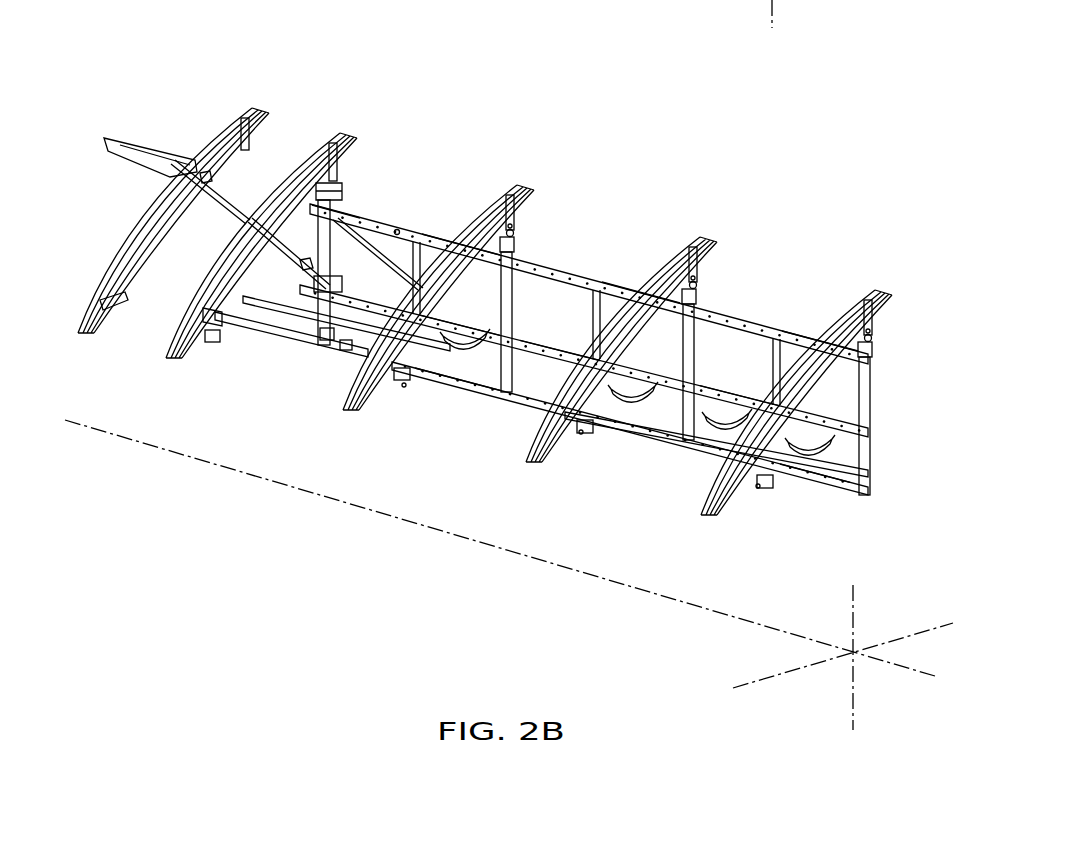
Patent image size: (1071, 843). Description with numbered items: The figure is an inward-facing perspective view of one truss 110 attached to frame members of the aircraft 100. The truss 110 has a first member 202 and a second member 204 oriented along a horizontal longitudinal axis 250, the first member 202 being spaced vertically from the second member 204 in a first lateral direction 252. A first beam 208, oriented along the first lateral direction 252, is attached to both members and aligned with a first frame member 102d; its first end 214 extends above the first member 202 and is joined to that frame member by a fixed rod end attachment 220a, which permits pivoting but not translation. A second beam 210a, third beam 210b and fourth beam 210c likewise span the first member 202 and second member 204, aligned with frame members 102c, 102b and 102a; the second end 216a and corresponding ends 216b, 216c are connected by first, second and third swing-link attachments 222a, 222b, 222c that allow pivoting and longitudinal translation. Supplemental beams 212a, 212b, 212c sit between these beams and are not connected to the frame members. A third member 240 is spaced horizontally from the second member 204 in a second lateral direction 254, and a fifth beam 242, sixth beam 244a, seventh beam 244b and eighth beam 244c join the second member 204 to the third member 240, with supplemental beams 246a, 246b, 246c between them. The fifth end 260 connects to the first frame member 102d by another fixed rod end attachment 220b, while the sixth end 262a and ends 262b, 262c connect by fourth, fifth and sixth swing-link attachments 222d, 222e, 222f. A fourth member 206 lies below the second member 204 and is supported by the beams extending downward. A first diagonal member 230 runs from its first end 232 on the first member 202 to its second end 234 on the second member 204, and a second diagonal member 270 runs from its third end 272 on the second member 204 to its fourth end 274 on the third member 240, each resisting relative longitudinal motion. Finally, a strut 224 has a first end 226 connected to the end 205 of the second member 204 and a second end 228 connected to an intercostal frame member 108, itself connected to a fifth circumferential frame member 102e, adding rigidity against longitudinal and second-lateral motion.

The aircraft 100 is at (165, 42).
The fourth frame member 102a is at (867, 290).
The third frame member 102b is at (693, 237).
The second frame member 102c is at (520, 183).
The first frame member 102d is at (335, 128).
The fifth circumferential frame member 102e is at (242, 105).
The another frame member 108 is at (133, 150).
The truss 110 is at (357, 547).
The first member 202 is at (582, 265).
The second member 204 is at (647, 375).
The end of the second member 205 is at (337, 205).
The fourth member 206 is at (820, 477).
The first beam 208 is at (318, 205).
The second beam 210a is at (508, 300).
The third beam 210b is at (695, 352).
The fourth beam 210c is at (875, 400).
The first supplemental beam 212a is at (433, 248).
The second supplemental beam 212b is at (622, 292).
The third supplemental beam 212c is at (780, 350).
The first end 214 is at (338, 215).
The second end 216a is at (515, 245).
The end of third beam 216b is at (697, 297).
The end of fourth beam 216c is at (872, 347).
The fixed rod end attachment 220a is at (335, 175).
The fixed rod end attachment 220b is at (214, 337).
The first swing-link attachment 222a is at (518, 230).
The second swing-link attachment 222b is at (700, 286).
The third swing-link attachment 222c is at (880, 332).
The fourth swing-link attachment 222d is at (404, 388).
The fifth swing-link attachment 222e is at (581, 434).
The sixth swing-link attachment 222f is at (758, 488).
The strut 224 is at (240, 220).
The first end of the strut 226 is at (307, 270).
The second end of the strut 228 is at (208, 185).
The first diagonal member 230 is at (388, 247).
The first end 232 is at (397, 228).
The second end 234 is at (343, 290).
The third member 240 is at (273, 320).
The fifth beam 242 is at (237, 303).
The sixth beam 244a is at (420, 380).
The seventh beam 244b is at (647, 423).
The eighth beam 244c is at (810, 480).
The fourth supplemental beam 246a is at (410, 332).
The fifth supplemental beam 246b is at (553, 367).
The sixth supplemental beam 246c is at (755, 405).
The longitudinal axis 250 is at (852, 0).
The first lateral direction 252 is at (772, 12).
The second lateral direction 254 is at (905, 630).
The fifth end 260 is at (238, 319).
The sixth end 262a is at (407, 374).
The end of seventh beam 262b is at (590, 427).
The end of eighth beam 262c is at (773, 497).
The second diagonal member 270 is at (320, 307).
The third end 272 is at (348, 306).
The fourth end 274 is at (327, 333).